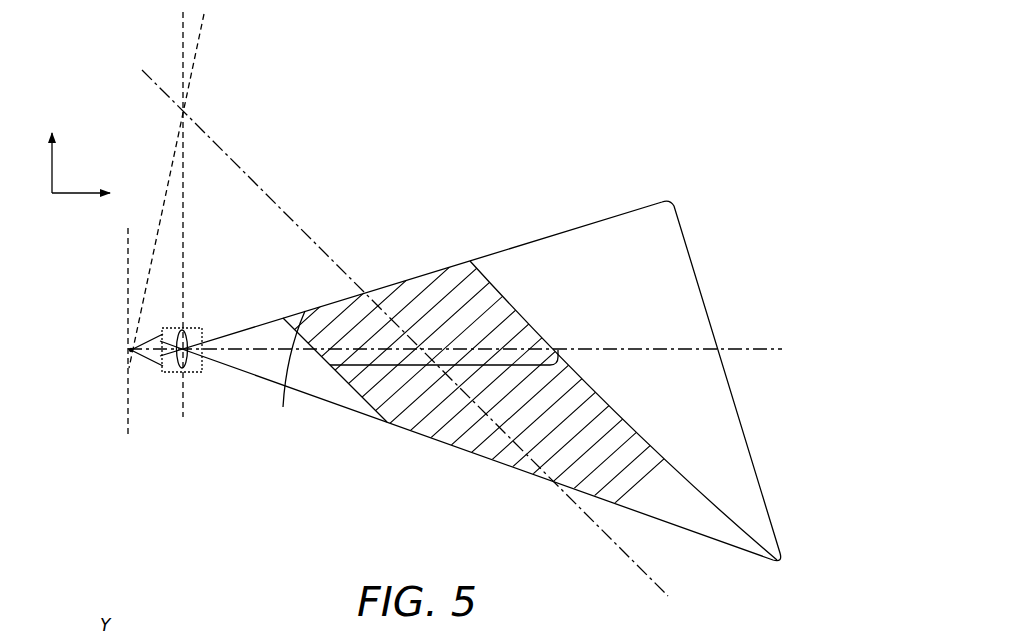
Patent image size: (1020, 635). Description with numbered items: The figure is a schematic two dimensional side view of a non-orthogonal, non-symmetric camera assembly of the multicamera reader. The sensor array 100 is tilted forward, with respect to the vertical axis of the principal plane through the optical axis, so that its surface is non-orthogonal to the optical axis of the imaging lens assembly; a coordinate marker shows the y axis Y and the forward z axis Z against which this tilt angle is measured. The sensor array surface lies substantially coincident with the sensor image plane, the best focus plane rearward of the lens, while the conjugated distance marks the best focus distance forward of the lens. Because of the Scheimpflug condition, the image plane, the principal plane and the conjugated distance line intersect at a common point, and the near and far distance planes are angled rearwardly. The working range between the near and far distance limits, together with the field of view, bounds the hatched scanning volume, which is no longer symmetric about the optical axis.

The sensor array 100 is at (133, 351).
The y axis Y is at (53, 149).
The z axis Z is at (93, 195).